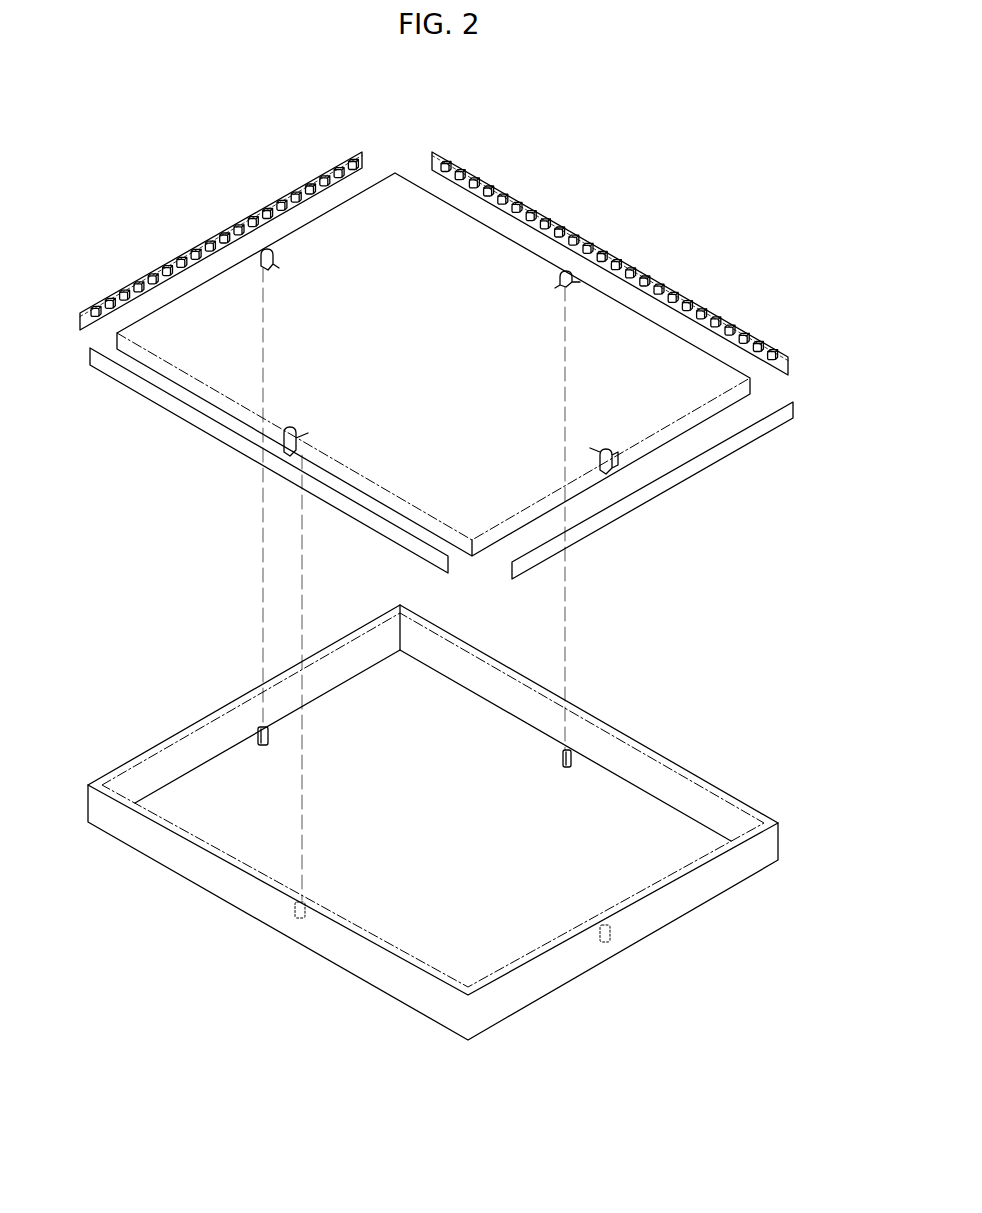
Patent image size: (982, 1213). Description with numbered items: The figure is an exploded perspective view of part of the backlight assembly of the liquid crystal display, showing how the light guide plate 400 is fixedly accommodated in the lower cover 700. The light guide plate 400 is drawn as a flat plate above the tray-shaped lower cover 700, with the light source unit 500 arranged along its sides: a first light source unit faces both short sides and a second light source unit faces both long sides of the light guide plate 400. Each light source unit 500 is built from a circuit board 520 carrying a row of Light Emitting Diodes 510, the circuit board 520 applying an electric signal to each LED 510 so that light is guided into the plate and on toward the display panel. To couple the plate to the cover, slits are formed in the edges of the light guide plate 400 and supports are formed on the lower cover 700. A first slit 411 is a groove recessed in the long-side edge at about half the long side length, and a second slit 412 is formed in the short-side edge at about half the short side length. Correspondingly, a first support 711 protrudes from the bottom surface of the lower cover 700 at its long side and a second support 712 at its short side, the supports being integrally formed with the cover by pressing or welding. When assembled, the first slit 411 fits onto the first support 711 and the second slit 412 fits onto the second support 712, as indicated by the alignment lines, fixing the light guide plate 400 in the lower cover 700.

The light guide plate 400 is at (602, 281).
The first slit 411 is at (562, 272).
The second slit 412 is at (260, 255).
The light source unit 500 is at (450, 336).
The Light Emitting Diode 510 is at (224, 229).
The circuit board 520 is at (221, 227).
The lower cover 700 is at (433, 822).
The first support 711 is at (573, 753).
The second support 712 is at (257, 733).